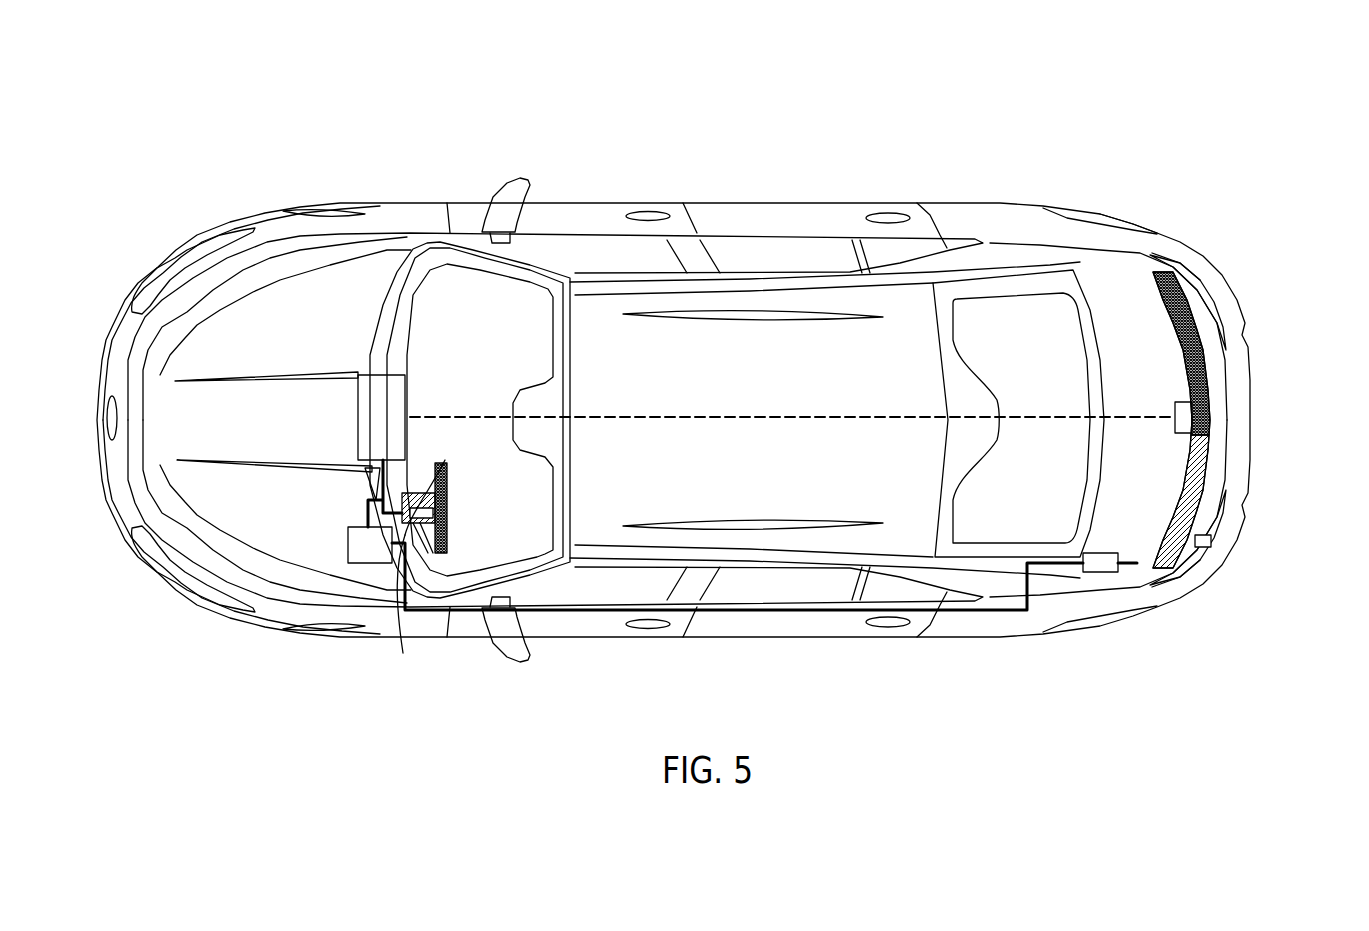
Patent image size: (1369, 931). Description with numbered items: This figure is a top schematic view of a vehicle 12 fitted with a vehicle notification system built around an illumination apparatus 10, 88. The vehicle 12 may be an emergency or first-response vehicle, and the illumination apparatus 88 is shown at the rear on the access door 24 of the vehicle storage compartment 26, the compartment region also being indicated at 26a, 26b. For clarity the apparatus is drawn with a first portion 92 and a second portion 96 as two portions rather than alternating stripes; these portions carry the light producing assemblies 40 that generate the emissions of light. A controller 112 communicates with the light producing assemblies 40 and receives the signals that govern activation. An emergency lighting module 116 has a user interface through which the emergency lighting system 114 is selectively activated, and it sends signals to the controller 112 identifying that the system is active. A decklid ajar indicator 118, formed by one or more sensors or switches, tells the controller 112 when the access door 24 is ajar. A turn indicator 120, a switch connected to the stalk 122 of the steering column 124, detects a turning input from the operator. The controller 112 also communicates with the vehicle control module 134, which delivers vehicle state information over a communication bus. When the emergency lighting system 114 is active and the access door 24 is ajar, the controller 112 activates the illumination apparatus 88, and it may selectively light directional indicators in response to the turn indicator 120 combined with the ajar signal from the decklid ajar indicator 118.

The illumination apparatus 10 is at (1072, 177).
The illumination apparatus 88 is at (665, 420).
The vehicle 12 is at (318, 105).
The access door 24 is at (1122, 280).
The vehicle storage compartment 26 is at (360, 480).
The first sensor 26a is at (1198, 545).
The second sensor 26b is at (1192, 298).
The light producing assemblies 40 is at (1208, 327).
The first portion 92 is at (1207, 445).
The second portion 96 is at (1208, 390).
The controller 112 is at (1210, 408).
The emergency lighting system 114 is at (277, 267).
The emergency lighting module 116 is at (372, 400).
The decklid ajar indicator 118 is at (1110, 563).
The turn indicator 120 is at (432, 514).
The stalk 122 is at (401, 645).
The steering column 124 is at (445, 460).
The vehicle control module 134 is at (357, 553).